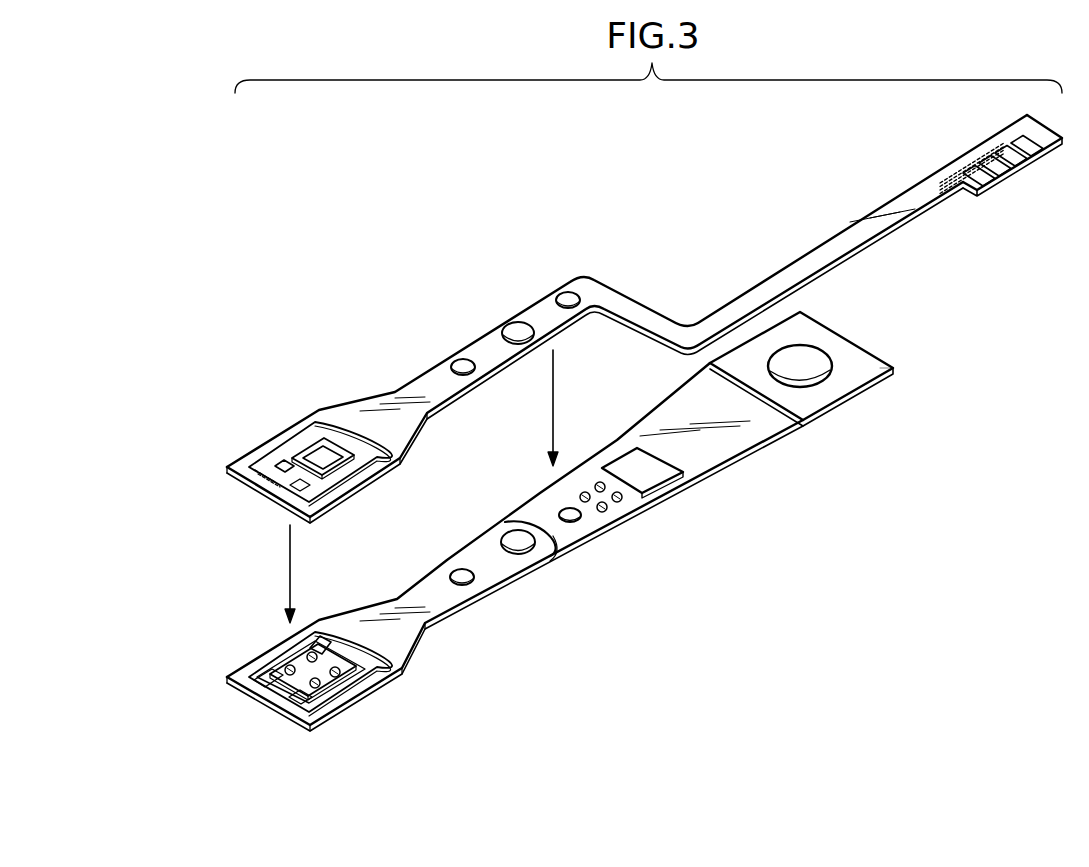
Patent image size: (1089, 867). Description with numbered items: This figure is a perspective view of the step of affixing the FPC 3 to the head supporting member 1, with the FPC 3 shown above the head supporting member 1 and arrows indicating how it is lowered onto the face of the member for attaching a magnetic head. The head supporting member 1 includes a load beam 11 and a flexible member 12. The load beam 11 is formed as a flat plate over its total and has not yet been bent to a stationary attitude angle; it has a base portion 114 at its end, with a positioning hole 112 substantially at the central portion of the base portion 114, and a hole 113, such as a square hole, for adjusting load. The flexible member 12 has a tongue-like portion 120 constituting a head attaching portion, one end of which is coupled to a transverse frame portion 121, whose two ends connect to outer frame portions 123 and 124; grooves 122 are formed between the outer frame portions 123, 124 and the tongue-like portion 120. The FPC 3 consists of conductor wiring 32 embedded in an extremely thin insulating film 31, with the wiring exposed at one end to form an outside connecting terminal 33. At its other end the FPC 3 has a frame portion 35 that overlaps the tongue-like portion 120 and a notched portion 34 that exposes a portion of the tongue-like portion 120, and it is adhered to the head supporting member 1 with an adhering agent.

The head supporting member 1 is at (566, 536).
The FPC 3 is at (644, 307).
The load beam 11 is at (773, 436).
The flexible member 12 is at (433, 557).
The insulating film 31 is at (732, 310).
The conductor wiring 32 is at (1003, 140).
The outside connecting terminal 33 is at (972, 165).
The notched portion 34 is at (305, 456).
The frame portion 35 is at (284, 462).
The positioning hole 112 is at (827, 358).
The hole 113 is at (632, 450).
The base portion 114 is at (880, 368).
The tongue-like portion 120 is at (310, 700).
The transverse frame portion 121 is at (273, 697).
The grooves 122 is at (331, 641).
The outer frame portion 123 is at (250, 668).
The outer frame portion 124 is at (377, 672).